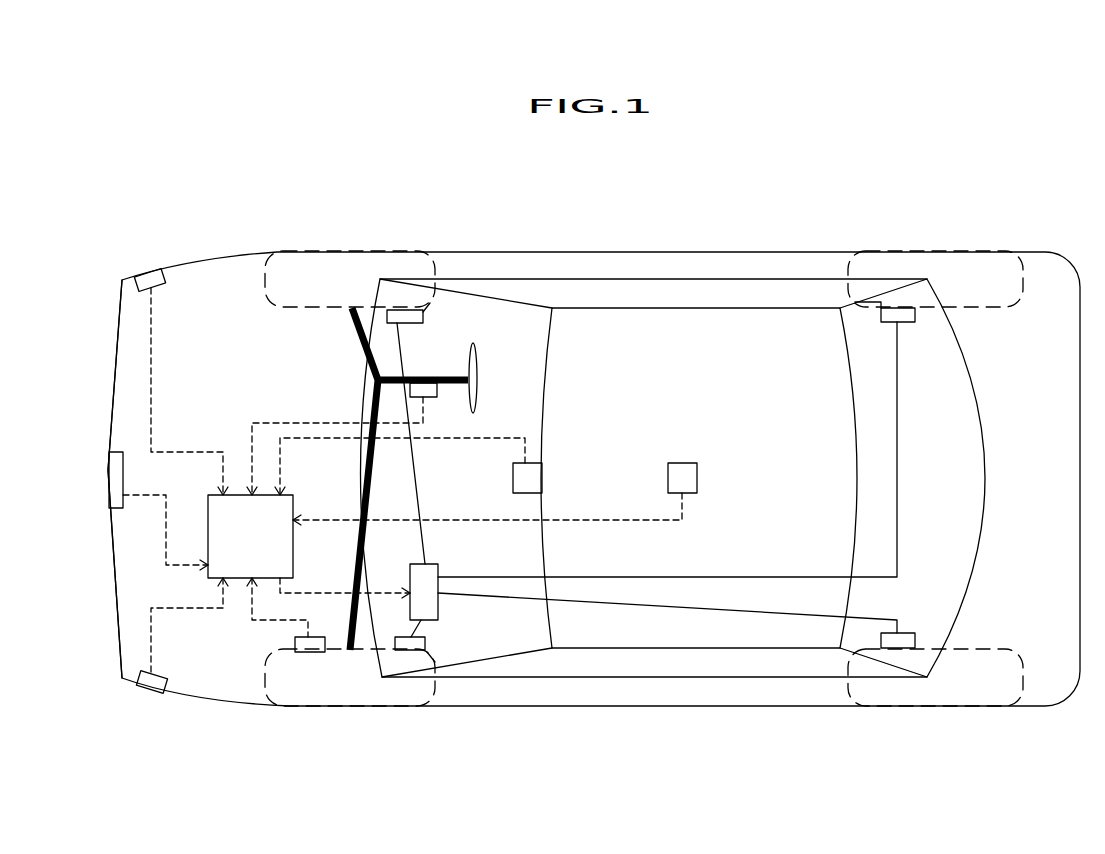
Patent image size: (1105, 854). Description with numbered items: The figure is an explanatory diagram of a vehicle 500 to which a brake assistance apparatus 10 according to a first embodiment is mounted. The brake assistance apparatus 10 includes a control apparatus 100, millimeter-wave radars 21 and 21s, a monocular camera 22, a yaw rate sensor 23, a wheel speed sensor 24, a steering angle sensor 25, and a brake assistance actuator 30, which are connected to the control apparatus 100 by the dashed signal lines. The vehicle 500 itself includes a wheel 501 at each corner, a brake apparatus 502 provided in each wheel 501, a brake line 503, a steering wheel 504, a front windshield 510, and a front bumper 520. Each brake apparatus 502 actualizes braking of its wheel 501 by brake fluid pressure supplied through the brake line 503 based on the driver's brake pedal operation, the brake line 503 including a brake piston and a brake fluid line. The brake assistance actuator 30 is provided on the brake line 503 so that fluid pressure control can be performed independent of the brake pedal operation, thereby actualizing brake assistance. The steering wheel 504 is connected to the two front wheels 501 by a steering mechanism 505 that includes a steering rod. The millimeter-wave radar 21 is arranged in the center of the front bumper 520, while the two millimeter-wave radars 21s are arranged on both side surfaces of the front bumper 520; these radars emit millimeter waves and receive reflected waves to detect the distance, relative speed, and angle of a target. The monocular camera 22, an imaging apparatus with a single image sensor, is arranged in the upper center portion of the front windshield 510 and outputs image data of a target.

The brake assistance apparatus 10 is at (136, 656).
The millimeter-wave radar 21 is at (112, 480).
The millimeter-wave radars 21s is at (146, 272).
The monocular camera 22 is at (408, 466).
The yaw rate sensor 23 is at (495, 494).
The wheel speed sensor 24 is at (302, 644).
The steering angle sensor 25 is at (437, 392).
The brake assistance actuator 30 is at (359, 592).
The control apparatus 100 is at (250, 536).
The vehicle 500 is at (672, 234).
The wheel 501 is at (350, 272).
The brake apparatus 502 is at (425, 316).
The brake line 503 is at (422, 560).
The steering wheel 504 is at (473, 348).
The steering mechanism 505 is at (372, 380).
The front windshield 510 is at (523, 408).
The front bumper 520 is at (112, 352).